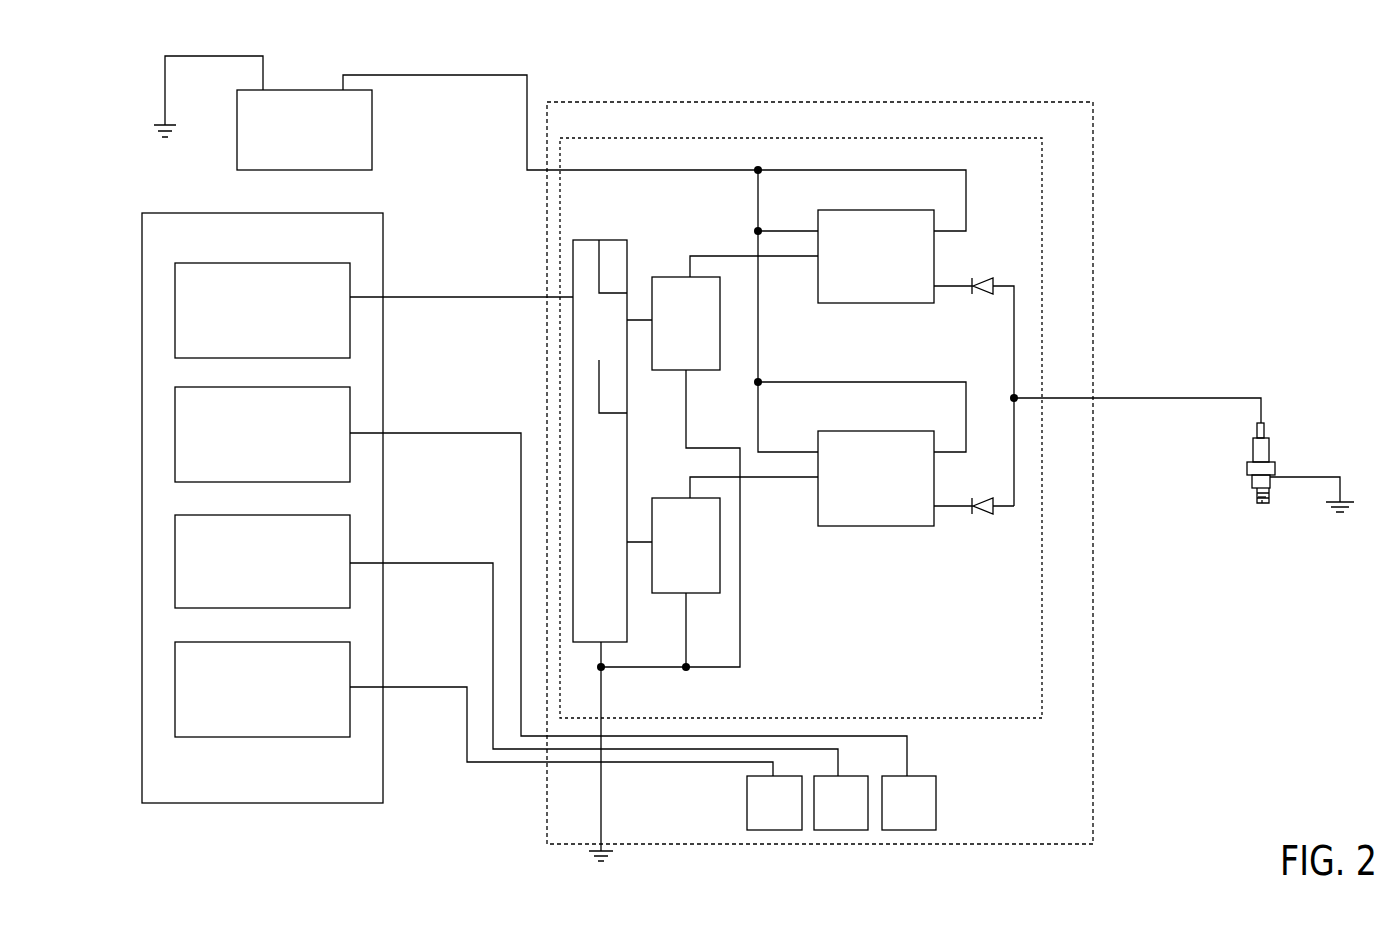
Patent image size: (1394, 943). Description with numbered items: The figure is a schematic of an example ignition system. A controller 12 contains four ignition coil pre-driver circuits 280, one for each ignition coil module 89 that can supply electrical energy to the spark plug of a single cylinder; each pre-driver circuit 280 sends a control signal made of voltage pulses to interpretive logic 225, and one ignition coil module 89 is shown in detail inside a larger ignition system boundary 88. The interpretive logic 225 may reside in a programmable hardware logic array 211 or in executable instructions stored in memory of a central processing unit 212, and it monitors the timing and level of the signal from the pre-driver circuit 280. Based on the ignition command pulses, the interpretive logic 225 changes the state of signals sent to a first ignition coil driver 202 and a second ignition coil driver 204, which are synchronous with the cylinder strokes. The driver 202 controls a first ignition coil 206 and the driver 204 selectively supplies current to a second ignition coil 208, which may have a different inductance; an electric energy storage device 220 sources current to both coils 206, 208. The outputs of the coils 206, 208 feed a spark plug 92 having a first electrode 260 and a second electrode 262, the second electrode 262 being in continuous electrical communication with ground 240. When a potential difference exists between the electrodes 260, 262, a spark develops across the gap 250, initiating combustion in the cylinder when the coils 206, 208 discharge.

The ground 240 is at (163, 122).
The electric energy storage device 220 is at (320, 134).
The controller 12 is at (300, 213).
The ignition coil pre-driver circuit 280 is at (268, 358).
The ignition coil assembly 88 is at (1093, 243).
The ignition coil module 89 is at (1043, 704).
The interpretive logic 225 is at (618, 454).
The programmable hardware logic array 211 is at (618, 258).
The central processing unit 212 is at (612, 396).
The ignition coil driver 202 is at (668, 330).
The ignition coil driver 204 is at (668, 553).
The first ignition coil 206 is at (858, 267).
The second ignition coil 208 is at (858, 488).
The spark plug 92 is at (1275, 459).
The first electrode 260 is at (1256, 493).
The gap 250 is at (1256, 497).
The second electrode 262 is at (1270, 503).